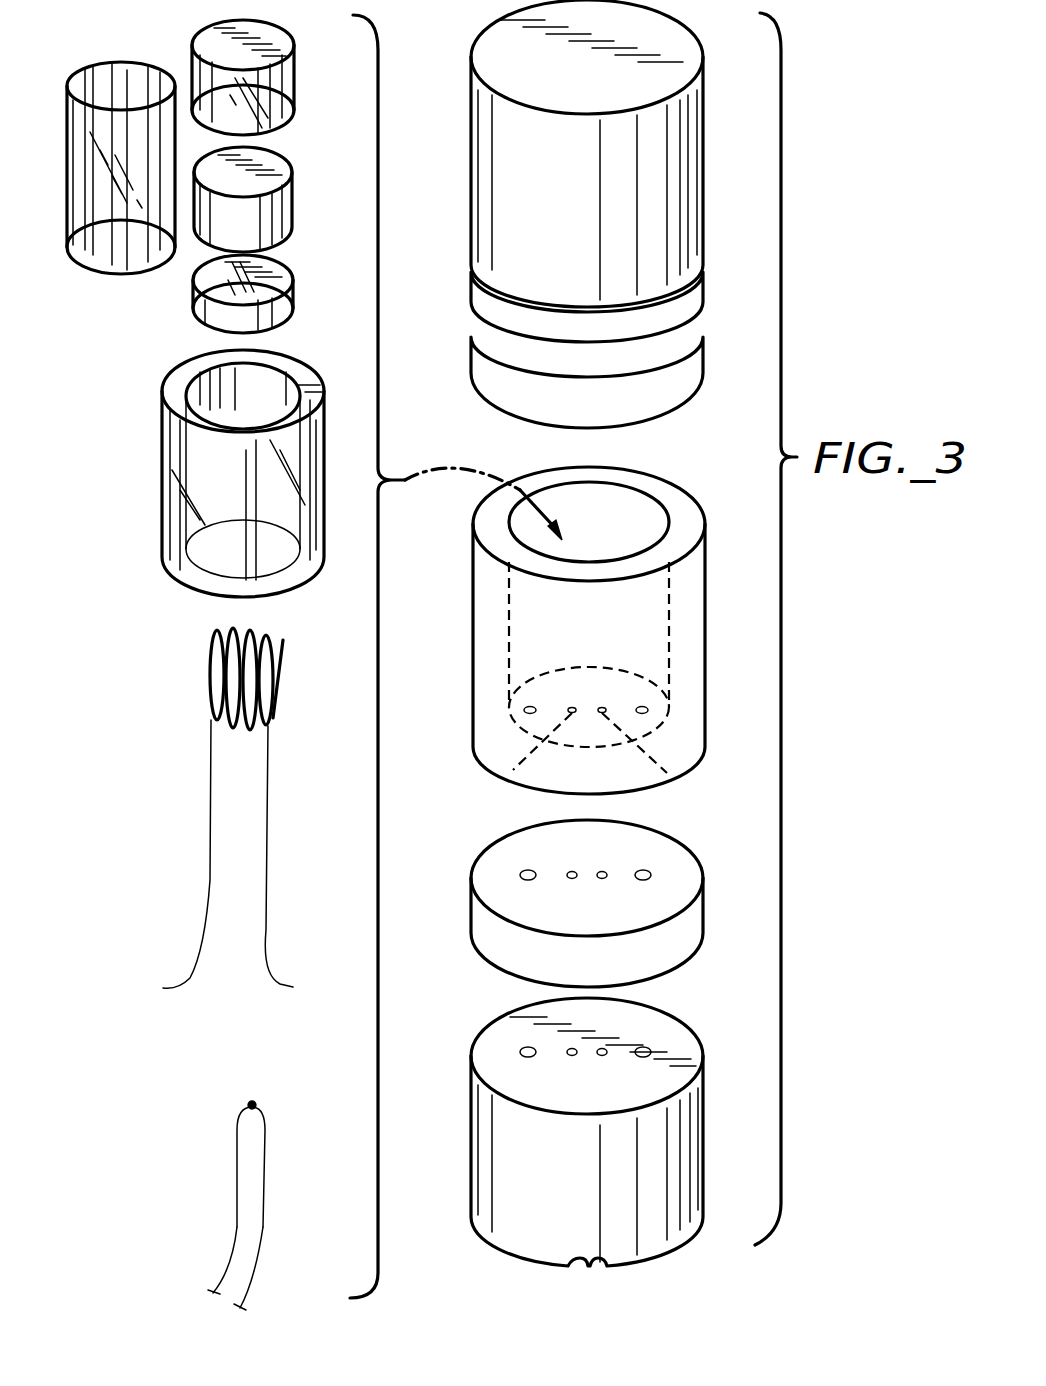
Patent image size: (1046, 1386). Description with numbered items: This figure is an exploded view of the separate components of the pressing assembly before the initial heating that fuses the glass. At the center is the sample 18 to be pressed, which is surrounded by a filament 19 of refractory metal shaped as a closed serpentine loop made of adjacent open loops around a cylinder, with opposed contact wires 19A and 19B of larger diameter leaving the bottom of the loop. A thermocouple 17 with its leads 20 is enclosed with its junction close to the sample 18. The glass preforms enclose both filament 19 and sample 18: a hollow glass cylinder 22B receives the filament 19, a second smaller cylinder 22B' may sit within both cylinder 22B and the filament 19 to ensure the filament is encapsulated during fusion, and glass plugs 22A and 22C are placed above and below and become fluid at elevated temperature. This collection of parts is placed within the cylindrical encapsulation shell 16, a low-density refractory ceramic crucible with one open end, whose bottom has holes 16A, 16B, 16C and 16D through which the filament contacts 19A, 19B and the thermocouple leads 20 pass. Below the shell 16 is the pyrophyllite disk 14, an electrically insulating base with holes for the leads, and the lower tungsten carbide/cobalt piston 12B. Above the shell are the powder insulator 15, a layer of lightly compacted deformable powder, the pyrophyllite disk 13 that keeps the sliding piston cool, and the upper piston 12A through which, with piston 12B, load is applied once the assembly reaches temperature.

The tungsten carbide/cobalt piston 12A is at (678, 128).
The tungsten carbide/cobalt piston 12B is at (653, 1167).
The pyrophyllite disk 13 is at (698, 320).
The pyrophyllite disk 14 is at (703, 917).
The powder insulator 15 is at (703, 368).
The encapsulation shell 16 is at (590, 638).
The hole 16A is at (524, 711).
The hole 16B is at (648, 711).
The hole 16C is at (513, 770).
The hole 16D is at (667, 773).
The thermocouple 17 is at (269, 1191).
The sample 18 is at (297, 203).
The filament 19 is at (240, 808).
The contact wire 19A is at (190, 980).
The contact wire 19B is at (280, 983).
The thermocouple leads 20 is at (263, 1230).
The encapsulation glass 22A is at (294, 90).
The encapsulation glass 22B is at (258, 486).
The encapsulation glass 22B' is at (121, 192).
The encapsulation glass 22C is at (290, 295).